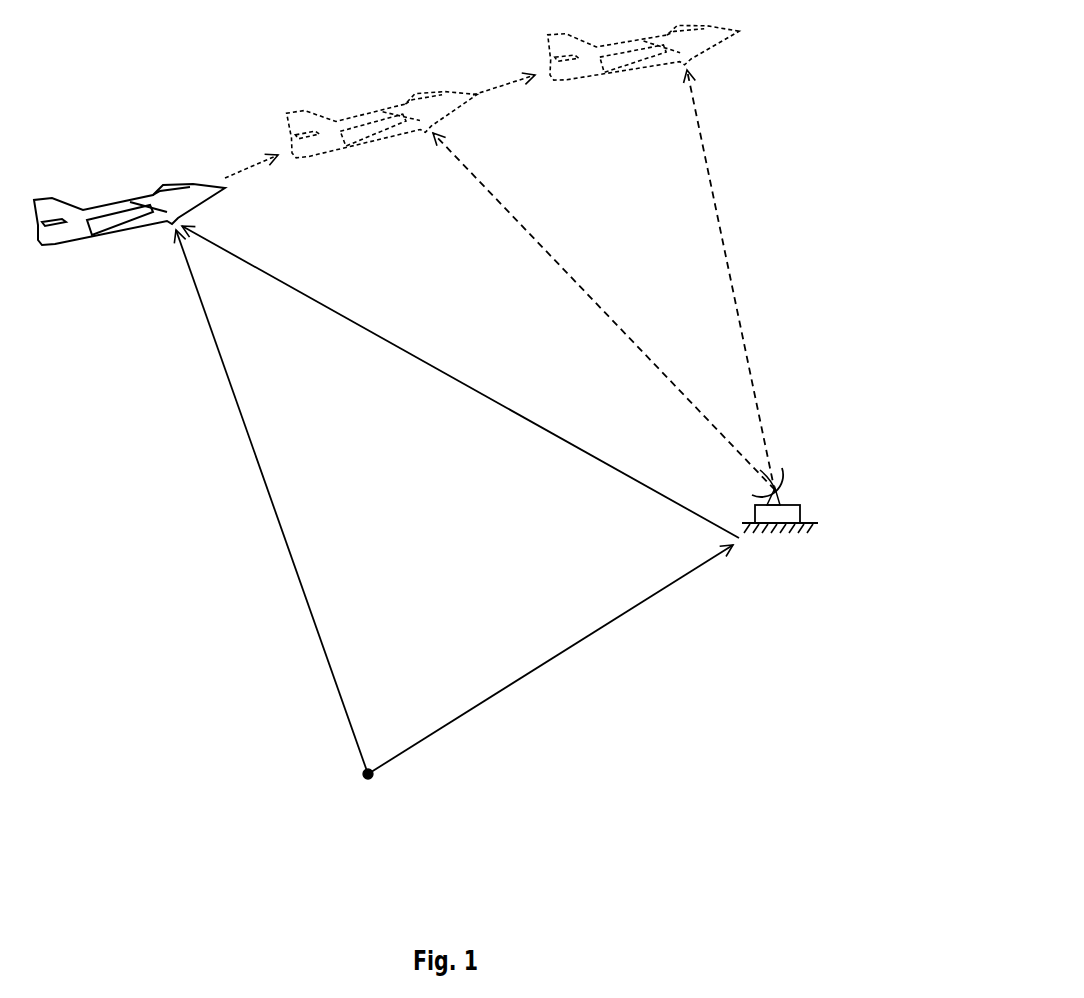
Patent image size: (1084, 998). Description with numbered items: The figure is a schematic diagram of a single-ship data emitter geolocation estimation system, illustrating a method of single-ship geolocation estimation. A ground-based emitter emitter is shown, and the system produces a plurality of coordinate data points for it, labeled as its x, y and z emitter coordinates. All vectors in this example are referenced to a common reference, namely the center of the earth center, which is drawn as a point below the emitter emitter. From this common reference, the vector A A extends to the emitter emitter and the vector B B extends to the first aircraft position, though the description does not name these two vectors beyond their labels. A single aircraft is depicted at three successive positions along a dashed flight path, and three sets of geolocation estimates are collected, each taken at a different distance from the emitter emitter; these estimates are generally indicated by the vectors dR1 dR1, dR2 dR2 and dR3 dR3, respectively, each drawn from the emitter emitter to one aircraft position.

The vector from center of Earth to emitter A is at (548, 625).
The vector from center of Earth to aircraft B is at (240, 490).
The first geolocation estimate vector dR1 is at (452, 395).
The second geolocation estimate vector dR2 is at (530, 258).
The third geolocation estimate vector dR3 is at (675, 143).
The element emitter is at (806, 514).
The center of the earth center is at (364, 799).